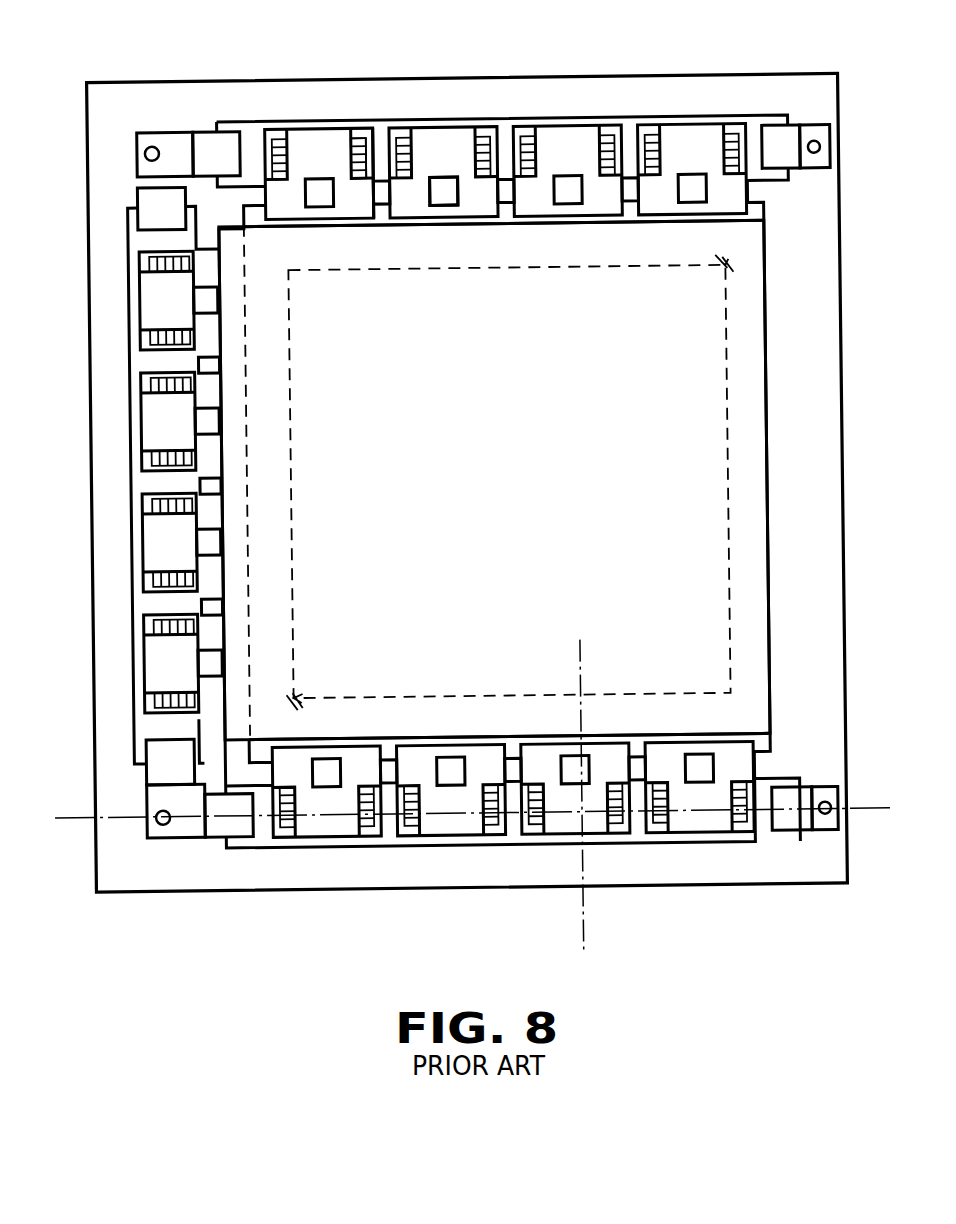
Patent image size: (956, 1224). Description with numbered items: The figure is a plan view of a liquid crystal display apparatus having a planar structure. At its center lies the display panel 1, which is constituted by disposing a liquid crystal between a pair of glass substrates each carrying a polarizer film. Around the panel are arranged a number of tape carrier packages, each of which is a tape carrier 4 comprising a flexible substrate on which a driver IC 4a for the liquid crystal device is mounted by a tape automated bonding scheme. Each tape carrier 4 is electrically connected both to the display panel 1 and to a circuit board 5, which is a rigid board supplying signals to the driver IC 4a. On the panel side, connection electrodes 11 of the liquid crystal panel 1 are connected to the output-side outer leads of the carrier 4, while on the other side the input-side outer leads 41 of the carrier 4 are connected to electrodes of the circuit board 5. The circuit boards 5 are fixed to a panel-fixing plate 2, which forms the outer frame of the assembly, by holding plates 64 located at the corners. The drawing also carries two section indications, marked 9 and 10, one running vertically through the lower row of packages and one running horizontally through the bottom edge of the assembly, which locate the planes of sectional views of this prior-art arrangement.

The display panel 1 is at (539, 296).
The panel-fixing plate 2 is at (618, 105).
The tape carrier 4 is at (436, 143).
The driver IC 4a is at (448, 188).
The circuit board 5 is at (382, 137).
The connection electrodes 11 is at (645, 209).
The input-side outer leads 41 is at (363, 137).
The holding plates 64 is at (180, 149).
The section line 9- 9 is at (586, 946).
The section line 10- 10 is at (871, 810).